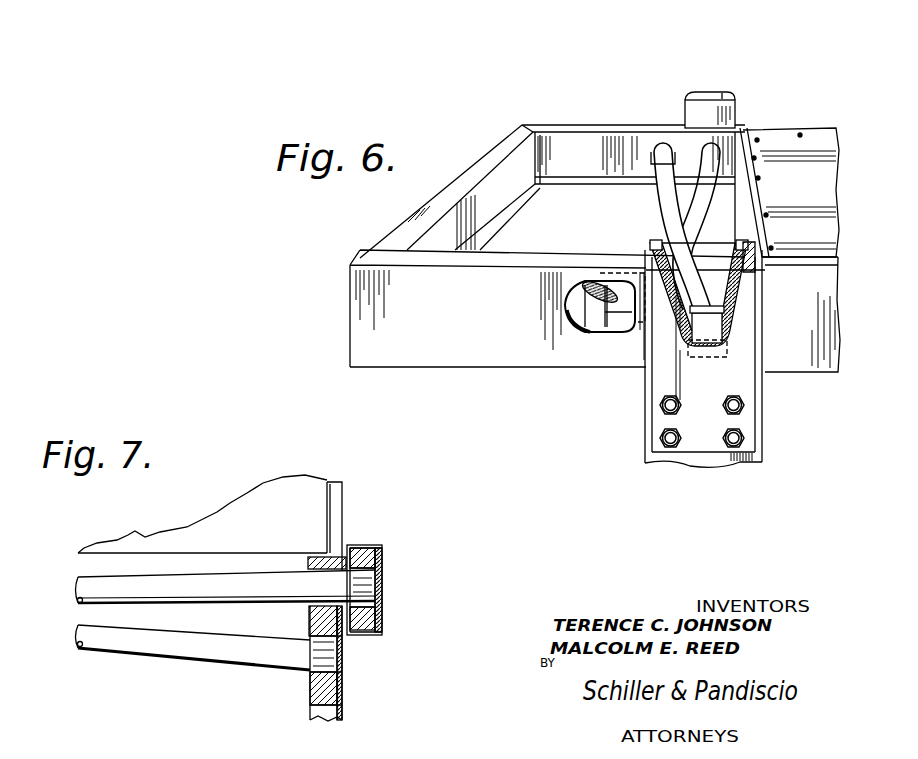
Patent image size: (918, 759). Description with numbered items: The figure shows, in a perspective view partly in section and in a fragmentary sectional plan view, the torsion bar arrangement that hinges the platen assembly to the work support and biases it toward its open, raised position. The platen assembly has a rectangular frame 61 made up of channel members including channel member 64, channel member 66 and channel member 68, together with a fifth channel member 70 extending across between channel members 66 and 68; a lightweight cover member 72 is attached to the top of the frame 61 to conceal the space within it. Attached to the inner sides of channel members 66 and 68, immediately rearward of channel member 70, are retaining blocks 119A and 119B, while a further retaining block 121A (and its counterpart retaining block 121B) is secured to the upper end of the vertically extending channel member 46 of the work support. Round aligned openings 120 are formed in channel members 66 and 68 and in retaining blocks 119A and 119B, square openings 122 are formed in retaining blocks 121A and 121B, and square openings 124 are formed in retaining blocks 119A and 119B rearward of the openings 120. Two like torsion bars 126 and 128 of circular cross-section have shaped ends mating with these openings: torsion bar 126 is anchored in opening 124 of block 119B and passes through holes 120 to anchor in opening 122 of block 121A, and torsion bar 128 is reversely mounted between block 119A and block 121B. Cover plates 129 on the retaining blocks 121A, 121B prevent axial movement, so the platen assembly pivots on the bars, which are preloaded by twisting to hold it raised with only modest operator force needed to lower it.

In FIG. 6, the channel member 46 is at (645, 450).
In FIG. 7, the channel member 46 is at (367, 545).
In FIG. 6, the rectangular frame 61 is at (393, 230).
In FIG. 6, the channel member 64 is at (483, 167).
In FIG. 6, the channel member 66 is at (479, 323).
In FIG. 7, the channel member 66 is at (340, 705).
In FIG. 6, the channel member 68 is at (593, 138).
In FIG. 6, the fifth channel member 70 is at (752, 227).
In FIG. 7, the cover member 72 is at (132, 533).
In FIG. 6, the retaining block 119A is at (590, 322).
In FIG. 7, the retaining block 119A is at (310, 690).
In FIG. 6, the retaining block 119B is at (683, 147).
In FIG. 6, the round aligned openings 120 is at (718, 158).
In FIG. 7, the round aligned openings 120 is at (310, 607).
In FIG. 6, the retaining block 121A is at (752, 262).
In FIG. 7, the retaining block 121A is at (370, 640).
In FIG. 6, the retaining block 121B is at (727, 97).
In FIG. 6, the non-circular openings 122 is at (698, 347).
In FIG. 7, the non-circular openings 122 is at (380, 613).
In FIG. 6, the non-circular openings 124 is at (652, 152).
In FIG. 7, the non-circular openings 124 is at (333, 683).
In FIG. 6, the torsion bar 126 is at (690, 237).
In FIG. 7, the torsion bar 126 is at (195, 593).
In FIG. 6, the torsion bar 128 is at (677, 210).
In FIG. 7, the torsion bar 128 is at (152, 643).
In FIG. 6, the cover plates 129 is at (703, 92).
In FIG. 7, the cover plates 129 is at (382, 565).